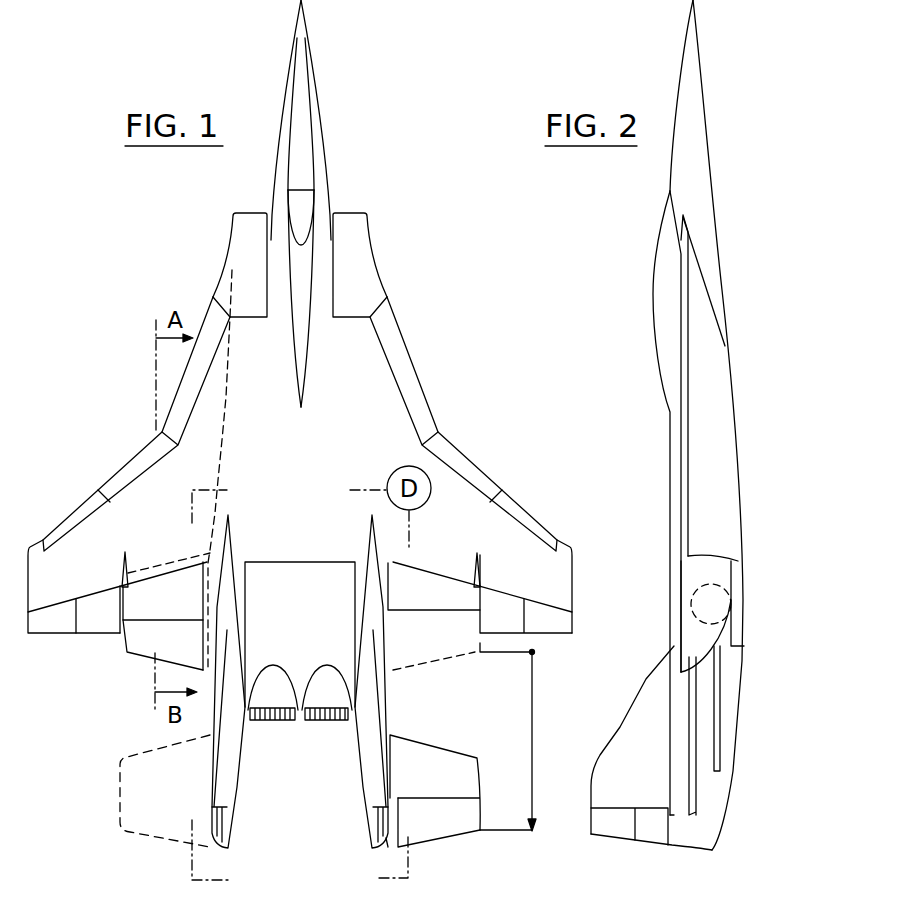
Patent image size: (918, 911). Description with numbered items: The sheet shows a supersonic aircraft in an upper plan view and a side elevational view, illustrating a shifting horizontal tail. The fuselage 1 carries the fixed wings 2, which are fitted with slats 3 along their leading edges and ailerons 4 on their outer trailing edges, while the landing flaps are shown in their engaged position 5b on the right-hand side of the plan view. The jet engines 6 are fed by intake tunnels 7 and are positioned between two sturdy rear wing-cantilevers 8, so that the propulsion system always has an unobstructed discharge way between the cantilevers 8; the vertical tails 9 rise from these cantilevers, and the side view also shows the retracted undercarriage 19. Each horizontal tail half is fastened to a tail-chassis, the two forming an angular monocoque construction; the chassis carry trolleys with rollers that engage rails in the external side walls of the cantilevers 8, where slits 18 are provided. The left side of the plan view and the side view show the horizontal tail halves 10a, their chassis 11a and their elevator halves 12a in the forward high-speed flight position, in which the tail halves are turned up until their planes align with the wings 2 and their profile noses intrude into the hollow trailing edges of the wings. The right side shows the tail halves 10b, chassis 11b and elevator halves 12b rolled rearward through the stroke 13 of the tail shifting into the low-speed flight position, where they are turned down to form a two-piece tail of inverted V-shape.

In FIG. 1, the fuselage 1 is at (325, 160).
In FIG. 2, the fuselage 1 is at (706, 215).
In FIG. 1, the fixed wings 2 is at (143, 497).
In FIG. 2, the fixed wings 2 is at (681, 401).
In FIG. 1, the slats 3 is at (83, 507).
In FIG. 1, the ailerons 4 is at (503, 608).
In FIG. 1, the landing flaps engaged 5b is at (442, 600).
In FIG. 1, the jet engines 6 is at (325, 687).
In FIG. 1, the intake tunnels 7 is at (224, 419).
In FIG. 2, the intake tunnels 7 is at (719, 440).
In FIG. 1, the rear wing-cantilevers 8 is at (362, 790).
In FIG. 2, the rear wing-cantilevers 8 is at (709, 823).
In FIG. 2, the vertical tails 9 is at (646, 756).
In FIG. 1, the horizontal tail halves in forward high-speed flight position 10a is at (137, 598).
In FIG. 1, the horizontal tail halves in rearward low-speed flight position 10b is at (427, 783).
In FIG. 1, the chassis in forward high-speed flight position 11a is at (202, 640).
In FIG. 2, the chassis in forward high-speed flight position 11a is at (711, 637).
In FIG. 1, the chassis in rearward low-speed flight position 11b is at (382, 843).
In FIG. 1, the elevator halves in forward high-speed flight position 12a is at (137, 645).
In FIG. 1, the elevator halves in rearward low-speed flight position 12b is at (455, 828).
In FIG. 1, the stroke of the tail shifting 13 is at (533, 742).
In FIG. 2, the slits in the external side walls of the cantilevers 18 is at (692, 786).
In FIG. 2, the retracted undercarriage 19 is at (725, 585).